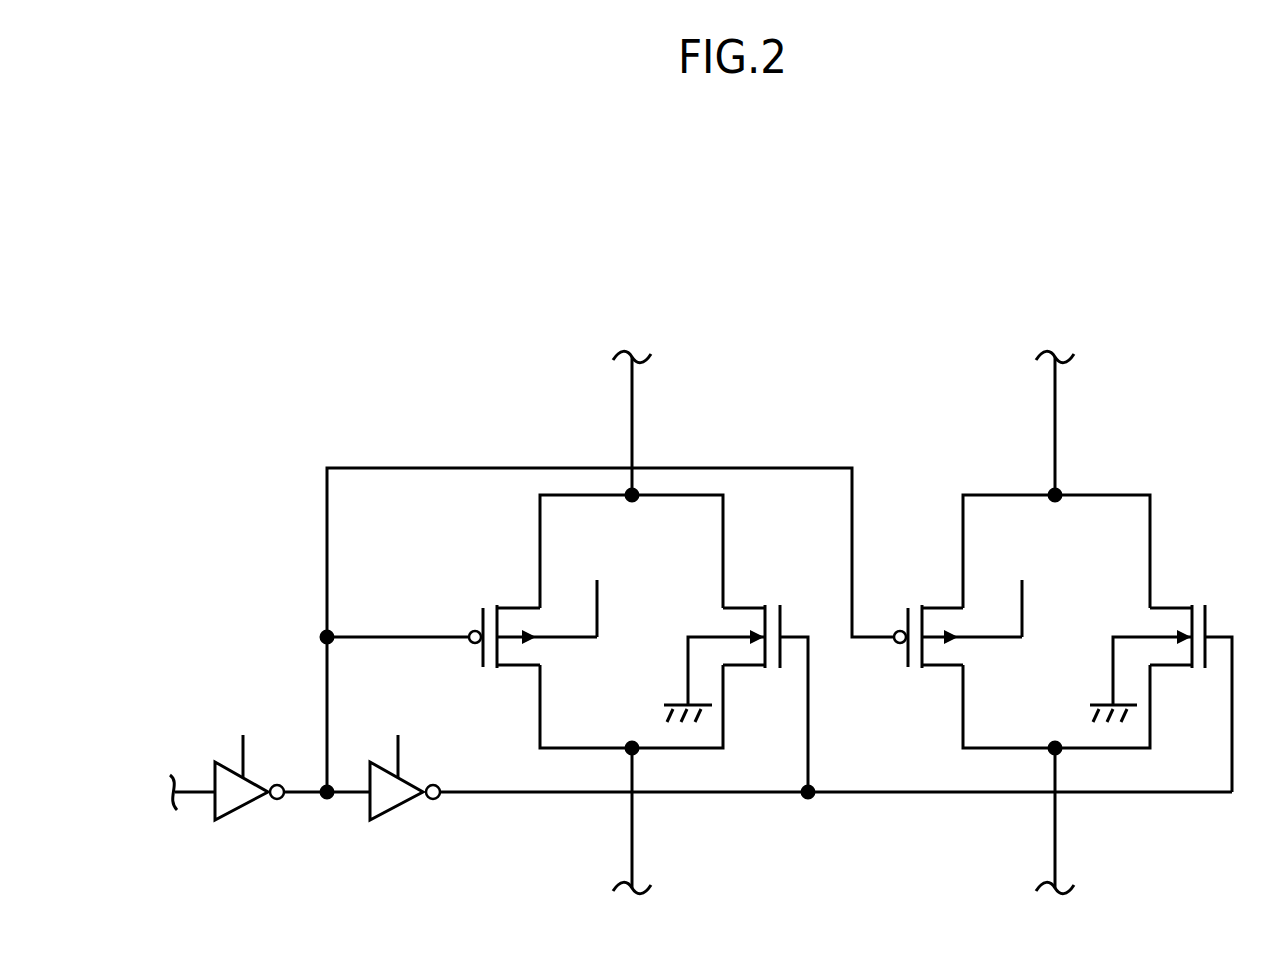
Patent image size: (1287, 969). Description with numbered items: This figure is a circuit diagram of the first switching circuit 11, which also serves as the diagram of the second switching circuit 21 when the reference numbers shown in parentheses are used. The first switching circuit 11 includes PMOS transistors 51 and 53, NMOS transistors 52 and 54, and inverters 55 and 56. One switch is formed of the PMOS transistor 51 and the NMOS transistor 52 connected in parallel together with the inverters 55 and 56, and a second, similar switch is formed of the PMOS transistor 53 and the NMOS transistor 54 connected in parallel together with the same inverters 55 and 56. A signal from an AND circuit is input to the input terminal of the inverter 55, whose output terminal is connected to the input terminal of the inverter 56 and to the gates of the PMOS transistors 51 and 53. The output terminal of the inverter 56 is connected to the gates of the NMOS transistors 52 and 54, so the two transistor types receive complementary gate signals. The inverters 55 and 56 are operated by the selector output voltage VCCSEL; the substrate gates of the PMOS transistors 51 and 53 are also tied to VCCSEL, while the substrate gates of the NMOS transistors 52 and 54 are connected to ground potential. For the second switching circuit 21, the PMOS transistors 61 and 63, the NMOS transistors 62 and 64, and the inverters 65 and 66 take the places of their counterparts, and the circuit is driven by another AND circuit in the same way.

The first switching circuit 11 is at (701, 568).
The second switching circuit 21 is at (1008, 293).
The PMOS transistor 51 is at (566, 622).
The PMOS transistor 61 is at (566, 622).
The NMOS transistor 52 is at (738, 680).
The NMOS transistor 62 is at (738, 680).
The PMOS transistor 53 is at (988, 622).
The PMOS transistor 63 is at (988, 622).
The NMOS transistor 54 is at (1164, 680).
The NMOS transistor 64 is at (1164, 680).
The inverter 55 is at (247, 772).
The inverter 65 is at (247, 772).
The inverter 56 is at (410, 772).
The inverter 66 is at (410, 772).